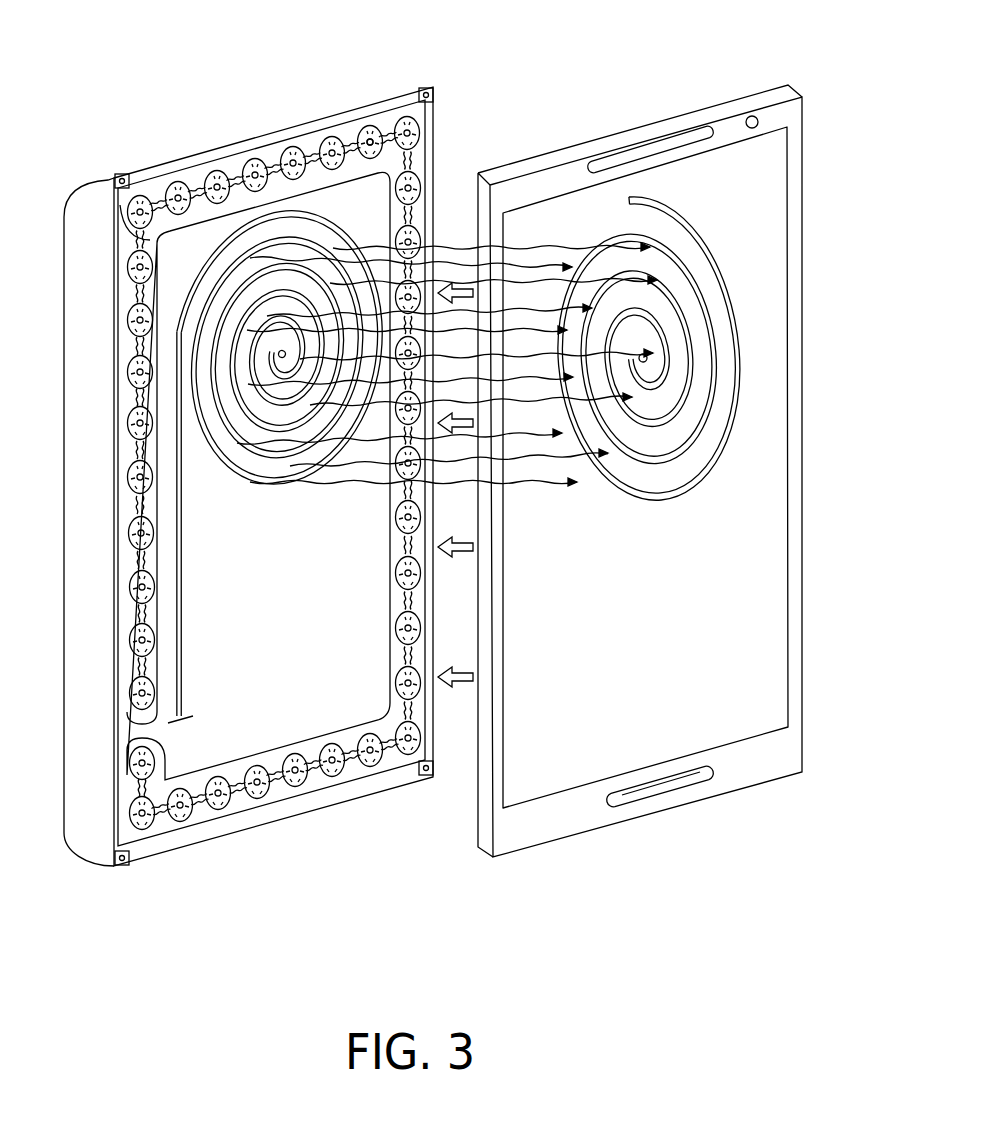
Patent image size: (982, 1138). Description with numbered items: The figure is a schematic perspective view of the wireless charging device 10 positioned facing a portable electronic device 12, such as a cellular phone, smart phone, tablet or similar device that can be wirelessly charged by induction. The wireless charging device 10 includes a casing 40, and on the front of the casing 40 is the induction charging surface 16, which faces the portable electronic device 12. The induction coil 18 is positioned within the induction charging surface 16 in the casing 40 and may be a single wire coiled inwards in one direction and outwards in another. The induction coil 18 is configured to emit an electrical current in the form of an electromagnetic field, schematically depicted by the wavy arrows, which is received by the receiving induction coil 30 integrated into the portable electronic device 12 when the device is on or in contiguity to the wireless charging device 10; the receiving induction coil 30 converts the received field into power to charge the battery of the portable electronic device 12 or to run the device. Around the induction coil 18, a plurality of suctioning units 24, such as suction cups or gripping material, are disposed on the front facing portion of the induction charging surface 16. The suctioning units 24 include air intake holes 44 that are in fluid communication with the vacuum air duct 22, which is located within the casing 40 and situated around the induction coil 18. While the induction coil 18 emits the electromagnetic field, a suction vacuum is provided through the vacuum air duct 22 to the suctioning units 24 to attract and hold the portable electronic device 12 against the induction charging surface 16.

The wireless charging device 10 is at (253, 449).
The portable electronic device 12 is at (728, 107).
The induction charging surface 16 is at (348, 135).
The induction coil 18 is at (272, 215).
The vacuum air duct 22 is at (157, 197).
The suctioning units 24 is at (215, 172).
The receiving induction coil 30 is at (718, 247).
The casing 40 is at (88, 220).
The air intake holes 44 is at (372, 143).